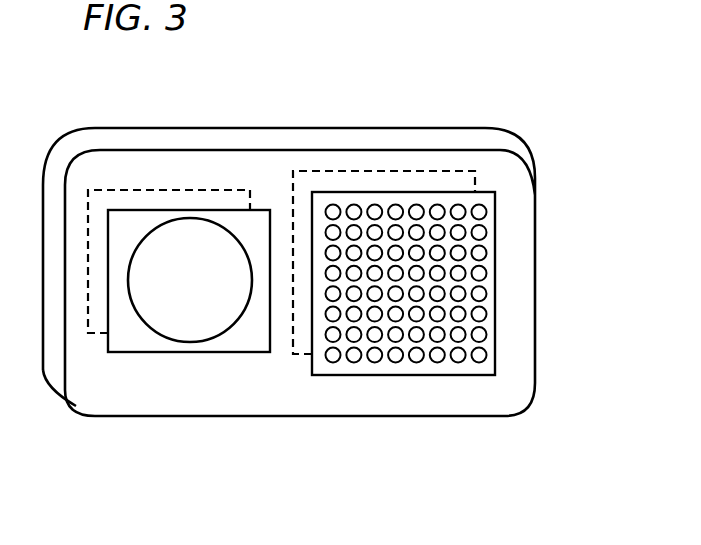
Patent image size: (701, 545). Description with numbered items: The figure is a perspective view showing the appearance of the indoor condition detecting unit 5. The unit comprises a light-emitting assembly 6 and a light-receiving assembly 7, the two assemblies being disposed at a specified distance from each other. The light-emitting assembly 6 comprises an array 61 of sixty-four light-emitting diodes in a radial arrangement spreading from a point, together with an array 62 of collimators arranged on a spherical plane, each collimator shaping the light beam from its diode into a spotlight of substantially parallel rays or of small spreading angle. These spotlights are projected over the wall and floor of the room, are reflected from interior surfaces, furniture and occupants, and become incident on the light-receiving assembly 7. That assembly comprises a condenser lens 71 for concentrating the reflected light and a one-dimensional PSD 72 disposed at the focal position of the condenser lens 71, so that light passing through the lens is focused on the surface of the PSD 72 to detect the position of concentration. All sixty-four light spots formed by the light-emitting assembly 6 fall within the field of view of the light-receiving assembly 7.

The indoor condition detecting unit 5 is at (543, 137).
The light-emitting assembly 6 is at (495, 336).
The array of light-emitting diodes 61 is at (400, 171).
The array of collimators 62 is at (437, 206).
The light-receiving assembly 7 is at (180, 315).
The condenser lens 71 is at (197, 227).
The one-dimensional PSD 72 is at (163, 190).